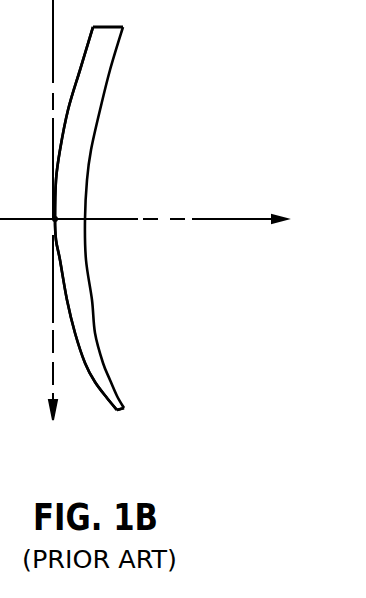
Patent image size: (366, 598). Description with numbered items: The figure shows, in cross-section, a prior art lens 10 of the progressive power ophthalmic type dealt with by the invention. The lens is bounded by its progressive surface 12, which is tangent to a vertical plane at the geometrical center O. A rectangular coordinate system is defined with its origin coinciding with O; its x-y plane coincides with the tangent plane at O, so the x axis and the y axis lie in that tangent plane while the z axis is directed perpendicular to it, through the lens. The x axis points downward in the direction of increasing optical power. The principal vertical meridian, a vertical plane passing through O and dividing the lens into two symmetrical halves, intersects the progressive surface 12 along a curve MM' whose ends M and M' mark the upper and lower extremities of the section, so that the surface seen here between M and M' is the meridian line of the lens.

The prior art lens 10 is at (101, 98).
The progressive surface 12 is at (75, 334).
The upper end of meridian line MM' M is at (101, 13).
The lower end of meridian line MM' M' is at (116, 424).
The geometrical center O is at (53, 221).
The x-axis x is at (55, 221).
The y-axis y is at (3, 210).
The z-axis z is at (170, 219).